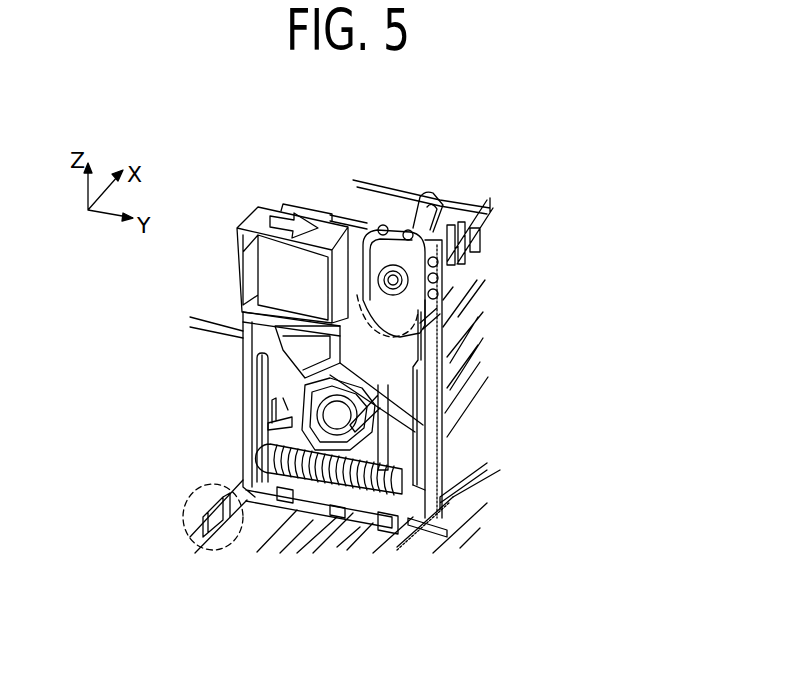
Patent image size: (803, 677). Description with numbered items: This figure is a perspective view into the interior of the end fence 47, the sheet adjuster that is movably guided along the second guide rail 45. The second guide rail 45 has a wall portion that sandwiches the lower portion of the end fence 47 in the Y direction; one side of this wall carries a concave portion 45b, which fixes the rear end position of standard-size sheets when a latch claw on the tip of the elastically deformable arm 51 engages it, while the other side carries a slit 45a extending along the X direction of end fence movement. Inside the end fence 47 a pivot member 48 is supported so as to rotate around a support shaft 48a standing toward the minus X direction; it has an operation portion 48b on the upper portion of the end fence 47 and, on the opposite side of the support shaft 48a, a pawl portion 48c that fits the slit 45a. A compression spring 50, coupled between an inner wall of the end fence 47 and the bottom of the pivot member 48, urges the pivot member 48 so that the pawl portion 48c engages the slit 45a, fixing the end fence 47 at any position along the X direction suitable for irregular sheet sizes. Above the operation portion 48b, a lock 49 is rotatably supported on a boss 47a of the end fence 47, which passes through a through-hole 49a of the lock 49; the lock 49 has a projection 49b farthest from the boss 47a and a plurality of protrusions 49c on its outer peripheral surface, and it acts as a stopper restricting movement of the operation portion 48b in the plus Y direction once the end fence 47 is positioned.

The second guide rail 45 is at (385, 482).
The slit 45a is at (443, 497).
The concave portion 45b is at (188, 502).
The end fence 47 is at (244, 433).
The boss 47a is at (410, 290).
The pivot member 48 is at (243, 322).
The support shaft 48a is at (400, 413).
The operation portion 48b is at (250, 214).
The pawl portion 48c is at (453, 527).
The lock 49 is at (455, 283).
The through-hole 49a is at (503, 300).
The projection 49b is at (443, 356).
The protrusions 49c is at (397, 213).
The compression spring 50 is at (316, 478).
The arm 51 is at (257, 376).